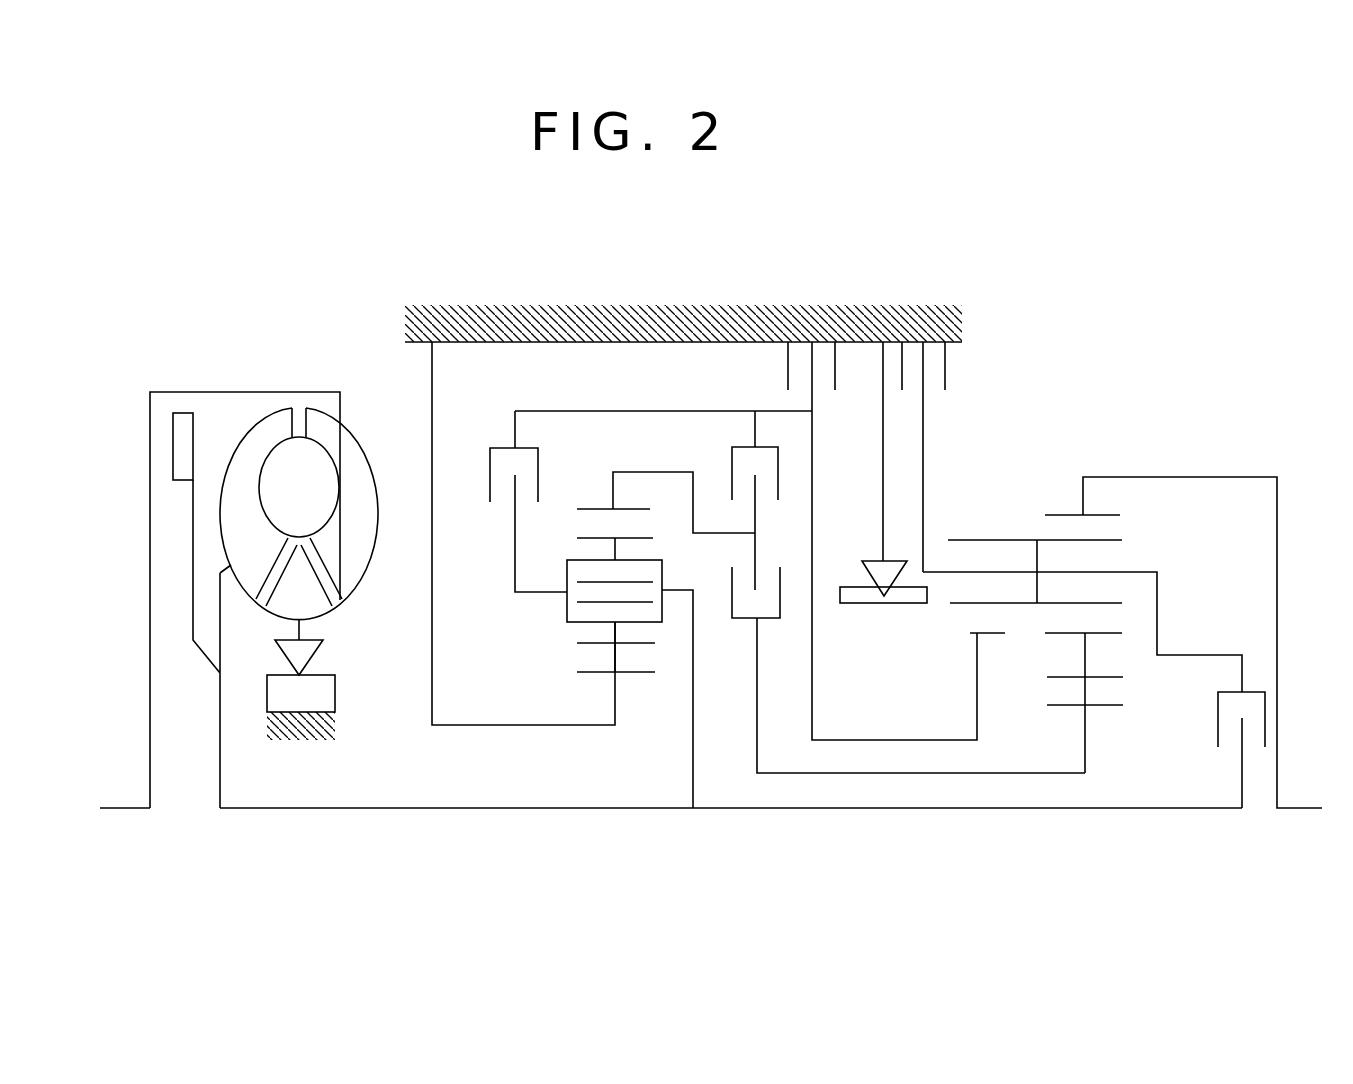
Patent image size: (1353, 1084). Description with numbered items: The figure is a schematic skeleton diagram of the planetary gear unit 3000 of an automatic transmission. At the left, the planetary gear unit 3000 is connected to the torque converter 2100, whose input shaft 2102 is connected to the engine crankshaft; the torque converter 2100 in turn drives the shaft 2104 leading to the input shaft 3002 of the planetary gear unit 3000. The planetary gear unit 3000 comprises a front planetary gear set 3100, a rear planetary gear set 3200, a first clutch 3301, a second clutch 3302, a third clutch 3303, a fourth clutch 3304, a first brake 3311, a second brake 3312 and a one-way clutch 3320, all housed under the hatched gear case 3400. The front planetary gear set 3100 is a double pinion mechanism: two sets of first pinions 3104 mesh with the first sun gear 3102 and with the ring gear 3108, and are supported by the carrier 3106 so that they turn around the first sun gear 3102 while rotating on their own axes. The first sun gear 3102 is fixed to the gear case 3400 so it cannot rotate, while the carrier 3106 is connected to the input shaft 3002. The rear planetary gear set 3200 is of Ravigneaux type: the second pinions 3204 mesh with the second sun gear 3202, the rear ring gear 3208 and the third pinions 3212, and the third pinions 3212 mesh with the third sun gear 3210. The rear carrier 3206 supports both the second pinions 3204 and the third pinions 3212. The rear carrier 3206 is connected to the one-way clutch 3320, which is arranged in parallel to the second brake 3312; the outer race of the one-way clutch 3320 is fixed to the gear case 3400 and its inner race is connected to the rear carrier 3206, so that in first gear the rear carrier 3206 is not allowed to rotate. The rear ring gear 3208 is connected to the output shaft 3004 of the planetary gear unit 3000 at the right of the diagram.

The torque converter 2100 is at (262, 362).
The input shaft 2102 is at (128, 812).
The output shaft of torque converter 2104 is at (290, 812).
The planetary gear unit 3000 is at (768, 290).
The input shaft 3002 is at (677, 812).
The output shaft 3004 is at (1298, 810).
The front planetary gear set 3100 is at (596, 590).
The first sun gear 3102 is at (632, 672).
The first pinions 3104 is at (633, 537).
The carrier 3106 is at (568, 602).
The ring gear 3108 is at (600, 507).
The rear planetary gear set 3200 is at (1087, 588).
The second sun gear 3202 is at (975, 633).
The second pinions 3204 is at (1002, 538).
The rear carrier 3206 is at (1145, 568).
The rear ring gear 3208 is at (1068, 513).
The third sun gear 3210 is at (1073, 703).
The third pinions 3212 is at (1108, 678).
The C1 clutch 3301 is at (768, 618).
The C2 clutch 3302 is at (1215, 725).
The C3 clutch 3303 is at (728, 463).
The C4 clutch 3304 is at (500, 448).
The B1 brake 3311 is at (788, 355).
The B2 brake 3312 is at (945, 360).
The one-way clutch 3320 is at (847, 607).
The gear case 3400 is at (607, 305).